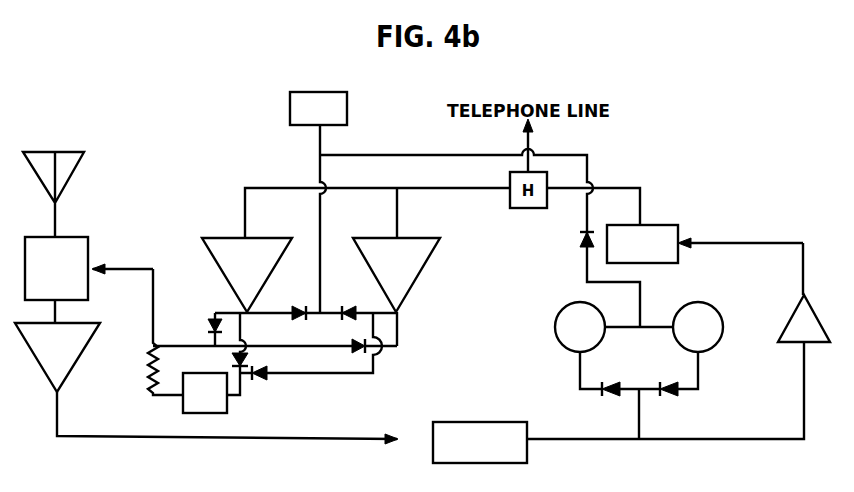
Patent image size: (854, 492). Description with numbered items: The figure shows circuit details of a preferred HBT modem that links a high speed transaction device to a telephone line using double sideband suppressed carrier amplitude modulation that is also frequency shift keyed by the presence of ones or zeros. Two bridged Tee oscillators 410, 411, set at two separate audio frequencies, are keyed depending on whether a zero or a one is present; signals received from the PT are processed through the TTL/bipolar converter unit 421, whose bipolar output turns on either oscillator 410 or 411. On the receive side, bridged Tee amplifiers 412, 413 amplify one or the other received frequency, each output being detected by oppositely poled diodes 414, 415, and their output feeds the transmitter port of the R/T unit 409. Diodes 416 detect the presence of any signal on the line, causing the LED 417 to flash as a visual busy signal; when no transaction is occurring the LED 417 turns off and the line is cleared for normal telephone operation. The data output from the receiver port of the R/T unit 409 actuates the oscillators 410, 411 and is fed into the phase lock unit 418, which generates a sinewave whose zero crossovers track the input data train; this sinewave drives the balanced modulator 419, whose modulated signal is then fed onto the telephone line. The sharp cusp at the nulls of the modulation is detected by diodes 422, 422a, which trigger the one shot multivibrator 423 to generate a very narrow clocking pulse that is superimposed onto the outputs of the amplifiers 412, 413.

The R/T unit 409 is at (90, 291).
The bridged Tee oscillator 410 is at (560, 333).
The bridged Tee oscillator 411 is at (713, 307).
The bridged Tee amplifier 412 is at (220, 275).
The bridged Tee amplifier 413 is at (418, 272).
The diode 414 is at (227, 320).
The diode 415 is at (400, 328).
The diodes 416 is at (347, 320).
The LED 417 is at (347, 108).
The phase lock unit 418 is at (793, 343).
The balanced modulator 419 is at (670, 223).
The TTL/bipolar converter unit 421 is at (508, 420).
The diode 422 is at (233, 360).
The diode 422a is at (263, 378).
The one shot multivibrator 423 is at (210, 413).